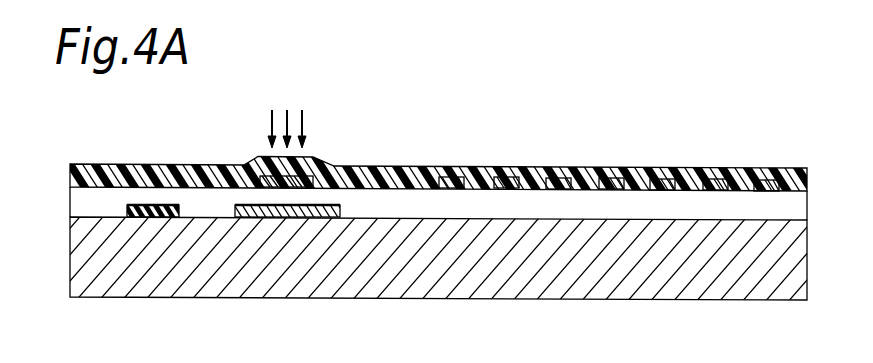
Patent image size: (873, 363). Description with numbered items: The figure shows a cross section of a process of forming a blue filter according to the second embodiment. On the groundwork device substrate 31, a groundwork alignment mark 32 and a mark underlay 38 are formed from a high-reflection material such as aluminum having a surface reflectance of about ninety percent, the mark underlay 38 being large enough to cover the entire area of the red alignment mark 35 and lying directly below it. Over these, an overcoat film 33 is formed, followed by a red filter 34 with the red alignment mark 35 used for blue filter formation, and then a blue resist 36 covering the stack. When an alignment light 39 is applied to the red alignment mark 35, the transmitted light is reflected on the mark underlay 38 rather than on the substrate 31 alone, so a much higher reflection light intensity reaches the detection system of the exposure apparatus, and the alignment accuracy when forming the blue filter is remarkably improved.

The groundwork device substrate 31 is at (620, 290).
The groundwork alignment mark 32 is at (150, 205).
The overcoat film 33 is at (795, 208).
The red filter 34 is at (447, 177).
The red alignment mark 35 is at (262, 171).
The blue resist 36 is at (147, 178).
The mark underlay 38 is at (322, 206).
The alignment light 39 is at (304, 116).